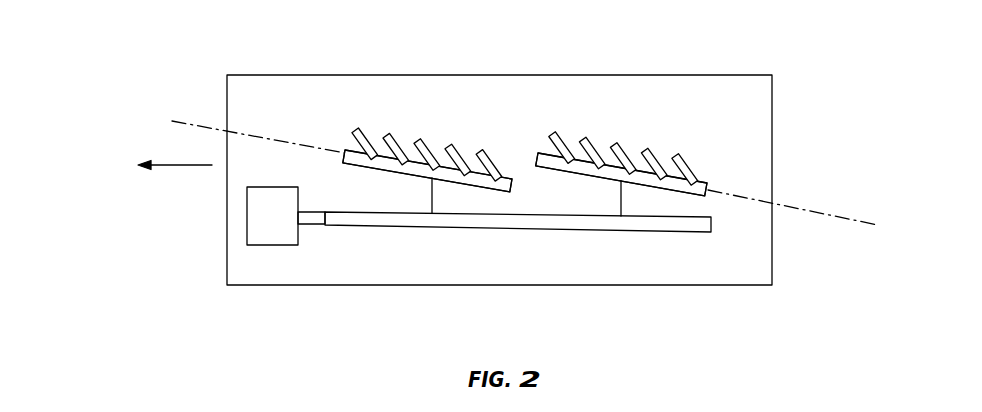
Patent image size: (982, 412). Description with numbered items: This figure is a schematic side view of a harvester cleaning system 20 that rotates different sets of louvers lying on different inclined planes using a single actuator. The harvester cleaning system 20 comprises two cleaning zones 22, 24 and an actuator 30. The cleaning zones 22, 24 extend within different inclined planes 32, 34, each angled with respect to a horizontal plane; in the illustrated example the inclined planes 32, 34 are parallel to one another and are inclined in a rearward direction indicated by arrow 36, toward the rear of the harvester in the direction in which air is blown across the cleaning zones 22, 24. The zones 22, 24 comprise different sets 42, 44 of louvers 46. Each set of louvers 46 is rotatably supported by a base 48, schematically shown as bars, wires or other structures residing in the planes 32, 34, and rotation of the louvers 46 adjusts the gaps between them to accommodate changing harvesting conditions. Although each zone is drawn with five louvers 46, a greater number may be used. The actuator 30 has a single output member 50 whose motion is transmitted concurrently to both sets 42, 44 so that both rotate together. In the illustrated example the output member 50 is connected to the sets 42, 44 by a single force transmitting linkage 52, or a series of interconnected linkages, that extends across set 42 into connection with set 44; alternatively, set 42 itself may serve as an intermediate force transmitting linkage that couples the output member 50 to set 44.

The harvester cleaning system 20 is at (108, 181).
The cleaning zone 22 is at (436, 107).
The cleaning zone 24 is at (645, 108).
The actuator 30 is at (246, 226).
The inclined plane 32 is at (210, 127).
The inclined plane 34 is at (856, 220).
The arrow 36 is at (167, 164).
The set of louvers 42 is at (344, 124).
The set of louvers 44 is at (714, 168).
The louvers 46 is at (423, 149).
The base 48 is at (378, 163).
The output member 50 is at (310, 224).
The linkage 52 is at (562, 232).